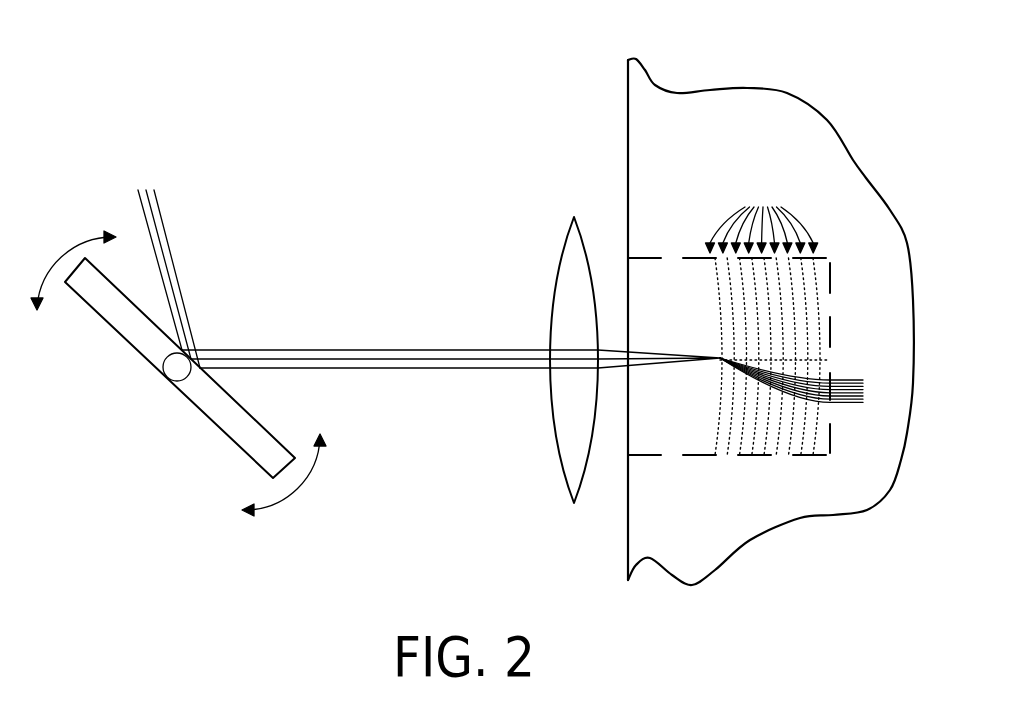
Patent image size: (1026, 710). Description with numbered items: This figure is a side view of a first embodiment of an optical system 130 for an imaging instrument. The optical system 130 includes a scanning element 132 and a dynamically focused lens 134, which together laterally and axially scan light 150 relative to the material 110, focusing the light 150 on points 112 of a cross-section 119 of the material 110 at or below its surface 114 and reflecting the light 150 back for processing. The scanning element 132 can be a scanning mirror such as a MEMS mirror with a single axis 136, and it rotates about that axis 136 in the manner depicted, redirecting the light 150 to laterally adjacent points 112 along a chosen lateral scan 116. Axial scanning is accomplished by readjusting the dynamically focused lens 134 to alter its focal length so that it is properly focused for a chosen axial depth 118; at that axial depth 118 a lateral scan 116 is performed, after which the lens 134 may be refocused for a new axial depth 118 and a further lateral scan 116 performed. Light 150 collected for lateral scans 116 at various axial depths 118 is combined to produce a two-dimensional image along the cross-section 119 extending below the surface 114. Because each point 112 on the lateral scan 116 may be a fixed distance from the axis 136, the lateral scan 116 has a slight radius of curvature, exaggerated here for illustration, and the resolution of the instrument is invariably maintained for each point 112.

The material 110 is at (862, 173).
The points 112 is at (720, 357).
The surface 114 is at (628, 133).
The lateral scan 116 is at (762, 217).
The axial depth 118 is at (811, 382).
The cross-section 119 is at (833, 332).
The optical system 130 is at (88, 125).
The scanning element 132 is at (222, 433).
The dynamically focused lens 134 is at (570, 215).
The axis 136 is at (177, 367).
The light 150 is at (158, 202).